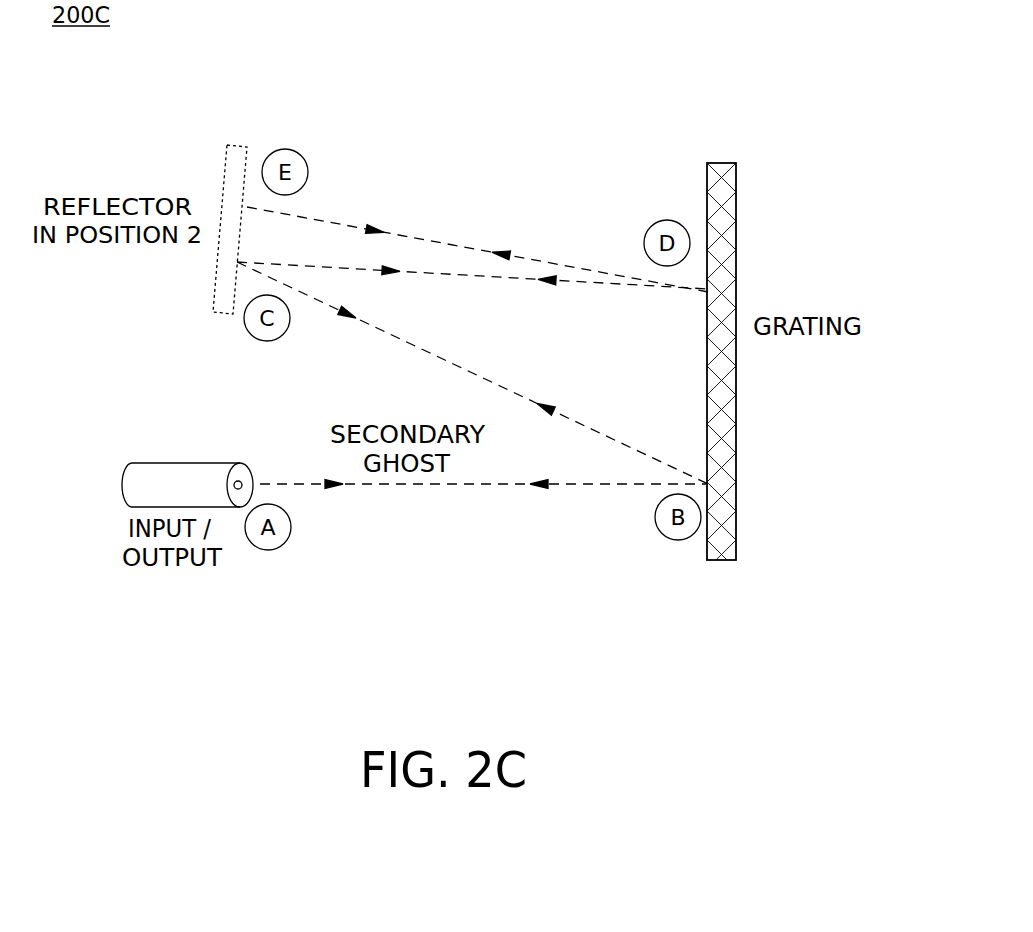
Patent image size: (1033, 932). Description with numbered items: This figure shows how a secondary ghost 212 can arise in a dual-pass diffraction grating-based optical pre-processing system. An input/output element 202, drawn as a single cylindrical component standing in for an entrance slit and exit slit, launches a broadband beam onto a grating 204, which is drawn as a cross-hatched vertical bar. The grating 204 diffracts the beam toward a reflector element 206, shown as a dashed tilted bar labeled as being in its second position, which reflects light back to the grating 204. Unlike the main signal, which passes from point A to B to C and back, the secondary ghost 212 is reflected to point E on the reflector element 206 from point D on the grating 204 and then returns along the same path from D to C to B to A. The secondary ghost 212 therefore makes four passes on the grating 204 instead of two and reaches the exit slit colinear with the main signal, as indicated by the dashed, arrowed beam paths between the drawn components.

The input/output element 202 is at (160, 463).
The grating 204 is at (737, 172).
The reflector element 206 is at (247, 158).
The secondary ghost 212 is at (470, 371).